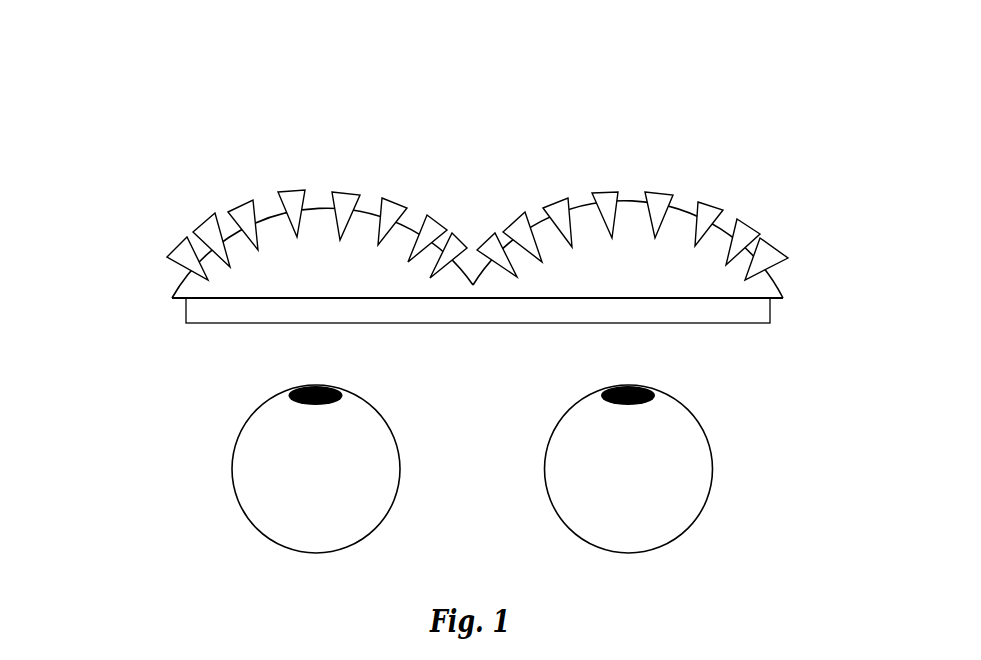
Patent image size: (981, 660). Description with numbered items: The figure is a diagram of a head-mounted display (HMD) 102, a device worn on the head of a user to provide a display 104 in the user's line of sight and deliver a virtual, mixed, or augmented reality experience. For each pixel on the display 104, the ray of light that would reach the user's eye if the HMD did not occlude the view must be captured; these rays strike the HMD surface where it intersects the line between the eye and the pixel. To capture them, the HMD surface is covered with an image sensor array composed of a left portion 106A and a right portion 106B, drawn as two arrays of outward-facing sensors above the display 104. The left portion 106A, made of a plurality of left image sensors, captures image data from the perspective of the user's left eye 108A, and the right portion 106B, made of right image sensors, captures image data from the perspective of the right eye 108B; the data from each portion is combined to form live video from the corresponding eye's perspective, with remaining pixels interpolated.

The head-mounted display (HMD) 102 is at (532, 170).
The display 104 is at (478, 310).
The left portion of the image sensor array 106A is at (465, 120).
The right portion of the image sensor array 106B is at (783, 120).
The left eye 108A is at (207, 469).
The right eye 108B is at (740, 469).